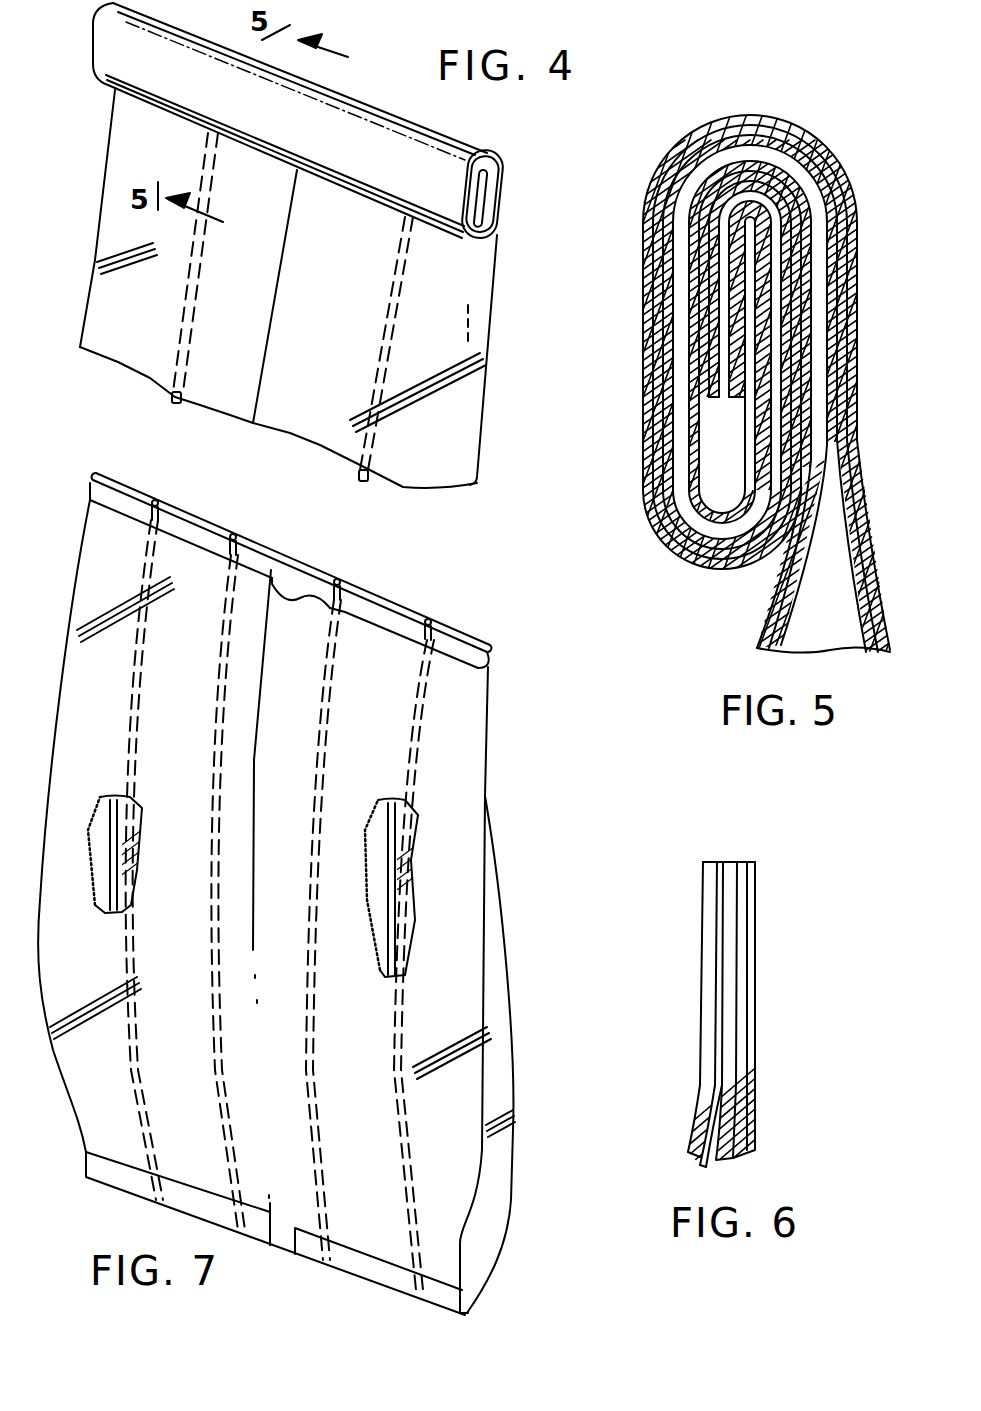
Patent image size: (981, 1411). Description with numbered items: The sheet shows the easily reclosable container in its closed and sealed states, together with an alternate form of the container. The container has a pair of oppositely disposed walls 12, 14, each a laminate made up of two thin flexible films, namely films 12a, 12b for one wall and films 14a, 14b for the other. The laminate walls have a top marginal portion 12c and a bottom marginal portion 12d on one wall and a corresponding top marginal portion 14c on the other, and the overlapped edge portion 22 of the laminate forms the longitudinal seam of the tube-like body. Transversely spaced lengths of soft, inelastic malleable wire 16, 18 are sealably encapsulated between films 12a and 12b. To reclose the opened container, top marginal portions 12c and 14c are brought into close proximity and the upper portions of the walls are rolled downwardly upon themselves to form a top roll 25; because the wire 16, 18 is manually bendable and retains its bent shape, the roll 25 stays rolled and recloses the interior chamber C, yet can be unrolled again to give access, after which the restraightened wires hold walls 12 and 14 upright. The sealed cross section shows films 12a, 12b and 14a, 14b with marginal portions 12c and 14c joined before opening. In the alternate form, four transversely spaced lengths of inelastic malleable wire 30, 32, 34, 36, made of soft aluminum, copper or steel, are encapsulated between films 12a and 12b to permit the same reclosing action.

In FIG. 4, the wall 12 is at (130, 148).
In FIG. 6, the wall 12 is at (699, 1017).
In FIG. 7, the wall 12 is at (461, 737).
In FIG. 5, the first thin flexible film 12a is at (770, 587).
In FIG. 6, the first thin flexible film 12a is at (698, 1098).
In FIG. 7, the first thin flexible film 12a is at (90, 880).
In FIG. 5, the second thin flexible film 12b is at (773, 615).
In FIG. 6, the second thin flexible film 12b is at (717, 1132).
In FIG. 7, the second thin flexible film 12b is at (122, 887).
In FIG. 6, the top marginal portion 12c is at (698, 940).
In FIG. 7, the top marginal portion 12c is at (133, 515).
In FIG. 7, the bottom marginal portion 12d is at (360, 1260).
In FIG. 4, the wall 14 is at (481, 428).
In FIG. 6, the wall 14 is at (755, 1022).
In FIG. 7, the wall 14 is at (405, 604).
In FIG. 5, the first thin flexible film 14a is at (850, 513).
In FIG. 6, the first thin flexible film 14a is at (750, 1095).
In FIG. 5, the second thin flexible film 14b is at (847, 562).
In FIG. 6, the second thin flexible film 14b is at (737, 1133).
In FIG. 6, the top marginal portion 14c is at (753, 932).
In FIG. 7, the top marginal portion 14c is at (205, 522).
In FIG. 4, the length of soft wire 16 is at (187, 325).
In FIG. 5, the length of soft wire 16 is at (683, 210).
In FIG. 6, the length of soft wire 16 is at (697, 1165).
In FIG. 4, the length of soft wire 18 is at (393, 342).
In FIG. 4, the edge portion 22 is at (257, 412).
In FIG. 7, the edge portion 22 is at (277, 613).
In FIG. 4, the top roll 25 is at (427, 153).
In FIG. 5, the top roll 25 is at (642, 306).
In FIG. 7, the length of inelastic malleable wire 30 is at (122, 817).
In FIG. 7, the length of inelastic malleable wire 32 is at (210, 1013).
In FIG. 7, the length of inelastic malleable wire 34 is at (303, 1020).
In FIG. 7, the length of inelastic malleable wire 36 is at (382, 953).
In FIG. 5, the interior chamber C is at (833, 630).